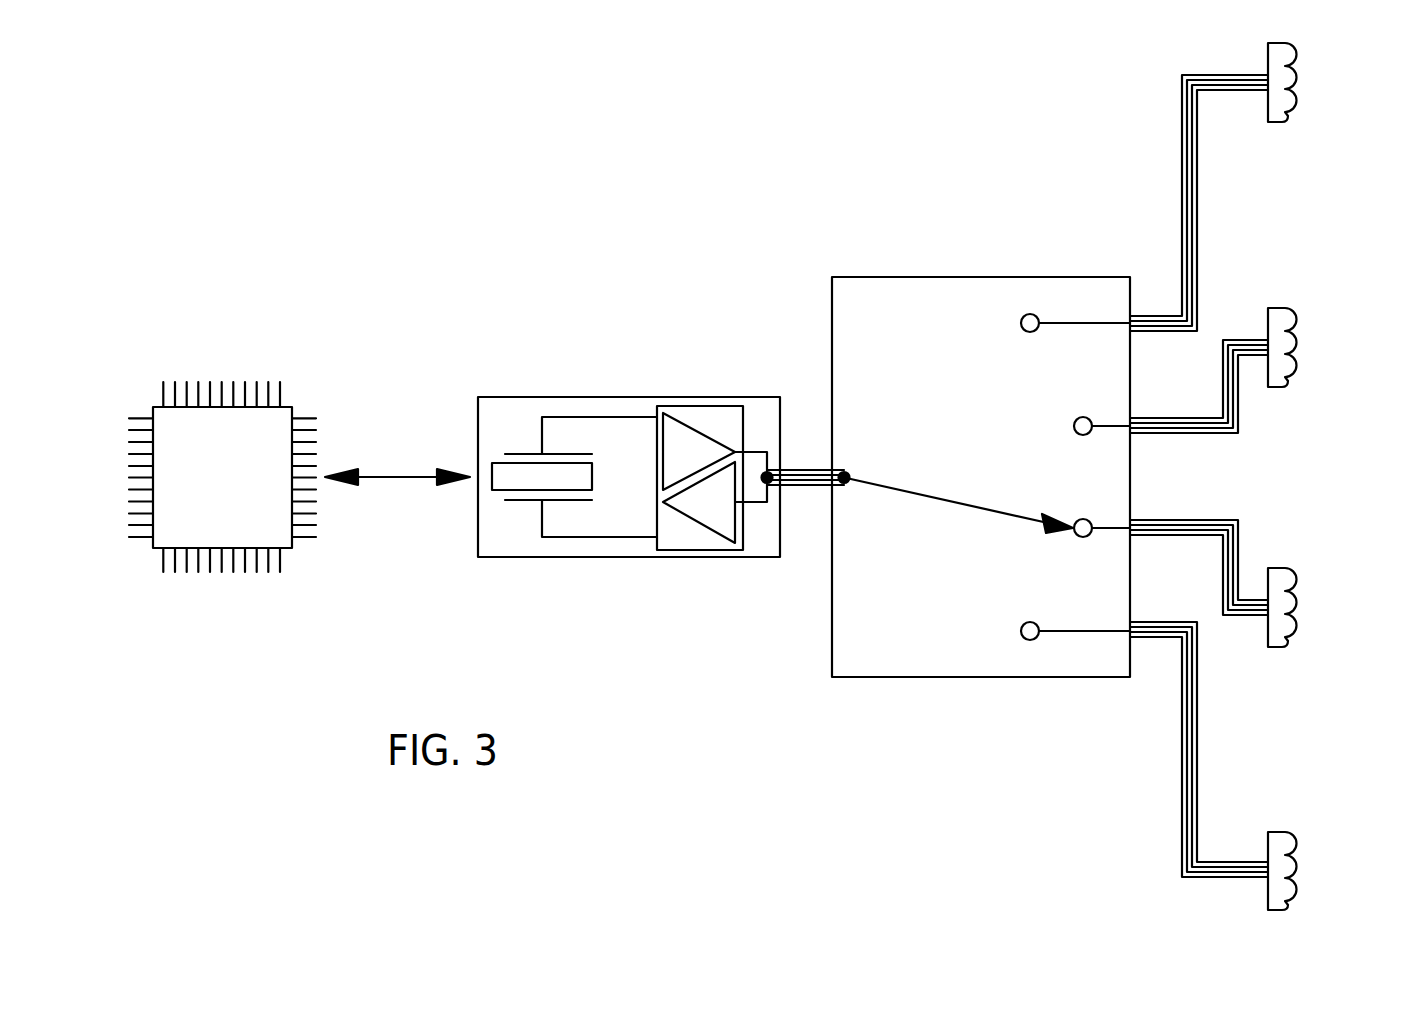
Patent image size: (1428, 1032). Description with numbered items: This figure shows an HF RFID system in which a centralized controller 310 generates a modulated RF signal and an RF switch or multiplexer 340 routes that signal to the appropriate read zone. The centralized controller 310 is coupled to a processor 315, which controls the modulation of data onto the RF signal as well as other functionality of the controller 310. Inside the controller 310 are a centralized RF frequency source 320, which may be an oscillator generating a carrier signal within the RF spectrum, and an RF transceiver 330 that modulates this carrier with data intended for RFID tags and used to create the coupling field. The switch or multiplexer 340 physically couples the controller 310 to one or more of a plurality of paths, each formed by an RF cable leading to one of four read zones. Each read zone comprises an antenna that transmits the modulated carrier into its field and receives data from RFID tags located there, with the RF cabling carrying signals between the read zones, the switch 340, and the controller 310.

The processor 315 is at (173, 428).
The centralized controller 310 is at (503, 555).
The centralized RF frequency source 320 is at (512, 470).
The RF transceiver 330 is at (703, 417).
The RF switch or multiplexer 340 is at (937, 300).